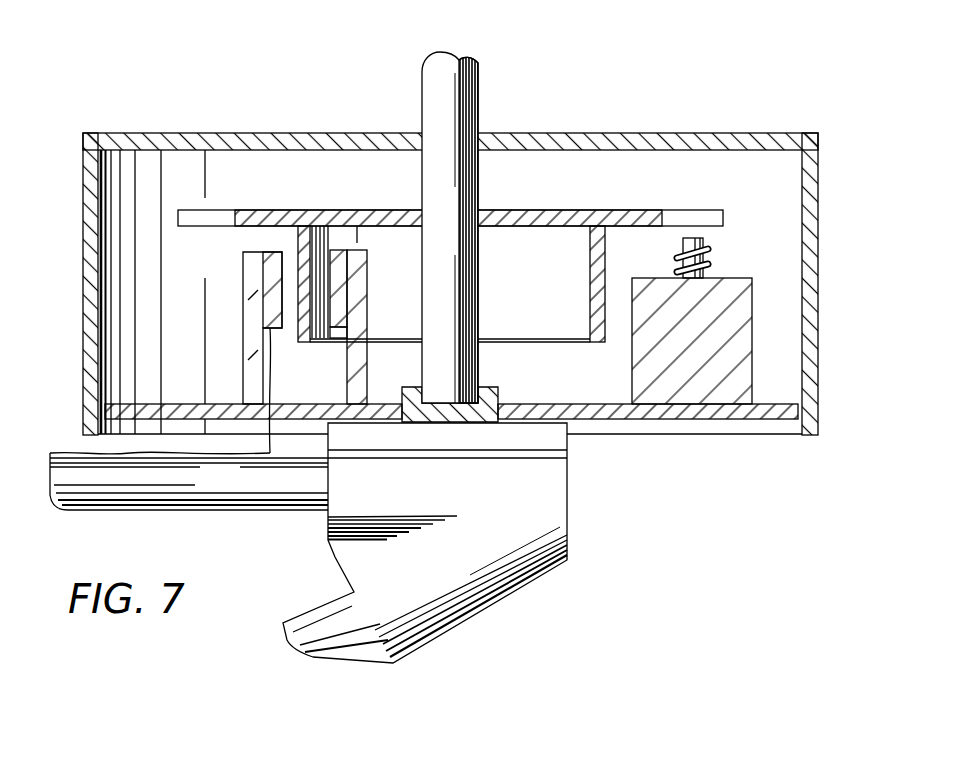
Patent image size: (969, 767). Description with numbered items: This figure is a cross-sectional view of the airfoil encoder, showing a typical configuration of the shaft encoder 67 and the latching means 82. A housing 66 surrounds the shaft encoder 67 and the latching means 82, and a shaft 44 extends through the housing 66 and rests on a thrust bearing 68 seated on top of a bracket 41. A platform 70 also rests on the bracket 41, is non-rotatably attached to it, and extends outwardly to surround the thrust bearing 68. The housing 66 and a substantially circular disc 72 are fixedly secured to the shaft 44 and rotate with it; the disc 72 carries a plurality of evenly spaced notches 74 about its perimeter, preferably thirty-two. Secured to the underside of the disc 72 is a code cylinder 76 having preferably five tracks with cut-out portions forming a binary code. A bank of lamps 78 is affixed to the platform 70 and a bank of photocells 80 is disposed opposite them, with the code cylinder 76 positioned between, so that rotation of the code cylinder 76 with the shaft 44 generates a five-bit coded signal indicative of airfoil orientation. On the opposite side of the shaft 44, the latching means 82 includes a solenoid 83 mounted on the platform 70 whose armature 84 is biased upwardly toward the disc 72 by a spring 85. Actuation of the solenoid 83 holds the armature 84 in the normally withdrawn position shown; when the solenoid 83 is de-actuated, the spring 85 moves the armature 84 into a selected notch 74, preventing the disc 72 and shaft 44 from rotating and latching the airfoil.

The bracket 41 is at (568, 497).
The shaft 44 is at (458, 50).
The housing 66 is at (345, 133).
The shaft encoder 67 is at (219, 258).
The thrust bearing 68 is at (494, 388).
The platform 70 is at (665, 413).
The circular disc 72 is at (560, 228).
The notches 74 is at (225, 210).
The code cylinder 76 is at (590, 305).
The bank of lamps 78 is at (364, 303).
The bank of photocells 80 is at (268, 306).
The latching means 82 is at (272, 373).
The solenoid 83 is at (714, 372).
The armature 84 is at (713, 257).
The spring 85 is at (672, 259).